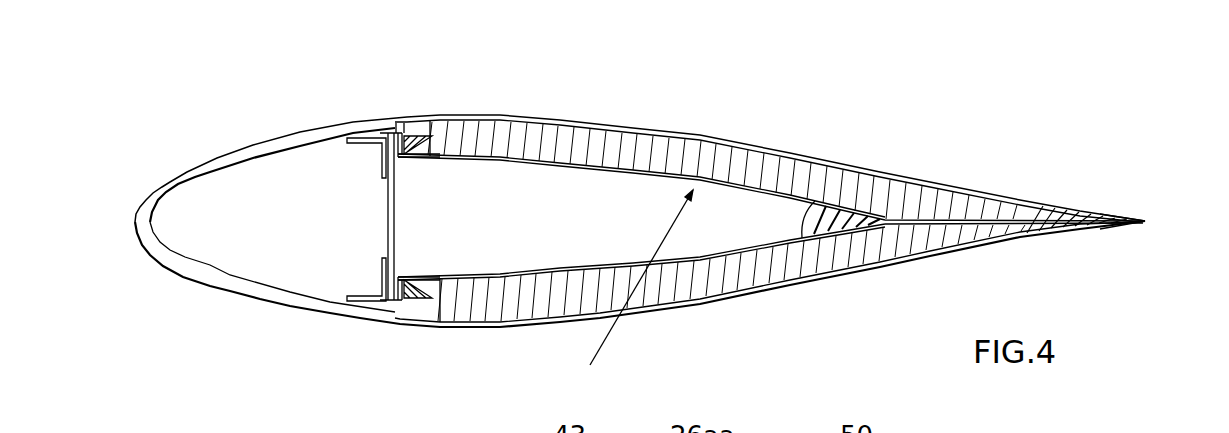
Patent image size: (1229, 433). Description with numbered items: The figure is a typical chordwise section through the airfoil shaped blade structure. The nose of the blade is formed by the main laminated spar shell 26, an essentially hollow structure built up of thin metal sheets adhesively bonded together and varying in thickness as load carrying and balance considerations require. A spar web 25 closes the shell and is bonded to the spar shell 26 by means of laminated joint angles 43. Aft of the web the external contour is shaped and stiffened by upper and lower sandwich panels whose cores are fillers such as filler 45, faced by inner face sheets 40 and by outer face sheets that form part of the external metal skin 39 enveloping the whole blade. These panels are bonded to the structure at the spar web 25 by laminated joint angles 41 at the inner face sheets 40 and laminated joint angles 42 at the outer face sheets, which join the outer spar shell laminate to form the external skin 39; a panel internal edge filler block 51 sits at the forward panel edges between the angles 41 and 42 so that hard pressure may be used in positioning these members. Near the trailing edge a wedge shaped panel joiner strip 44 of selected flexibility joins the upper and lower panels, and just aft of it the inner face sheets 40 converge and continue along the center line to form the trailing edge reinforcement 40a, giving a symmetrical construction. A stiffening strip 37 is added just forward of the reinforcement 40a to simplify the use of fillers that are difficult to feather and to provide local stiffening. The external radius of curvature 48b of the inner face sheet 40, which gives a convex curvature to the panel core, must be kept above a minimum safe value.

The spar shell 26 is at (217, 158).
The spar web 25 is at (390, 205).
The laminated joint angles 43 is at (360, 144).
The panel internal edge filler block 51 is at (412, 128).
The laminated joint angles 41 is at (410, 162).
The laminated joint angles 42 is at (410, 310).
The filler 45 is at (567, 150).
The external metal skin 39 is at (725, 140).
The inner face sheets 40 is at (594, 265).
The wedge shaped panel joiner strip 44 is at (837, 213).
The stiffening strip 37 is at (1030, 215).
The trailing edge reinforcement 40a is at (1160, 259).
The external radius of curvature of inner face sheet 48b is at (587, 380).